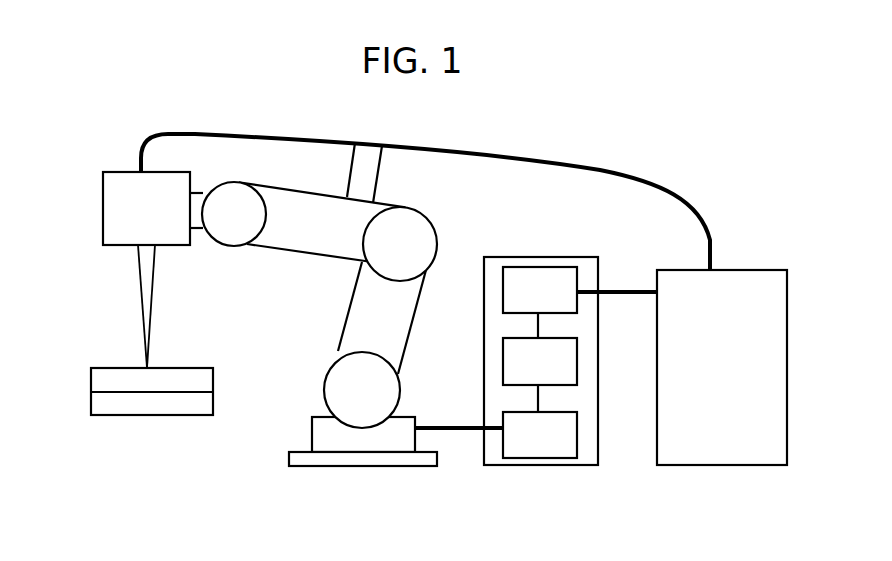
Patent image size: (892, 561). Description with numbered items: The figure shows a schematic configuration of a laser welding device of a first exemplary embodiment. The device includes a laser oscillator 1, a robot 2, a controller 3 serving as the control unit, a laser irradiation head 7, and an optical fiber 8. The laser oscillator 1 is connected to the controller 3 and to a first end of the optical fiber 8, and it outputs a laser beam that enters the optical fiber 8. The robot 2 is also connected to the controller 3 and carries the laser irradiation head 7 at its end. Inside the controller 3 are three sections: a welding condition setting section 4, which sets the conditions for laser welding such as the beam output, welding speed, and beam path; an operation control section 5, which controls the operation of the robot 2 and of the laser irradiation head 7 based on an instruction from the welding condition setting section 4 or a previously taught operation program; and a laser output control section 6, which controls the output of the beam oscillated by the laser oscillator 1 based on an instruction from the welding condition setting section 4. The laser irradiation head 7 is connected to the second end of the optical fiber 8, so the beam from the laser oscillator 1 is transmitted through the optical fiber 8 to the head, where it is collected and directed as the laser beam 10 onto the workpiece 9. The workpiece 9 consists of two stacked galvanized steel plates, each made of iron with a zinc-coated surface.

The laser oscillator 1 is at (723, 448).
The robot 2 is at (368, 400).
The controller 3 is at (493, 455).
The welding condition setting section 4 is at (565, 358).
The operation control section 5 is at (557, 448).
The laser output control section 6 is at (545, 276).
The laser irradiation head 7 is at (122, 193).
The optical fiber 8 is at (255, 135).
The workpiece 9 is at (117, 385).
The laser beam 10 is at (143, 302).